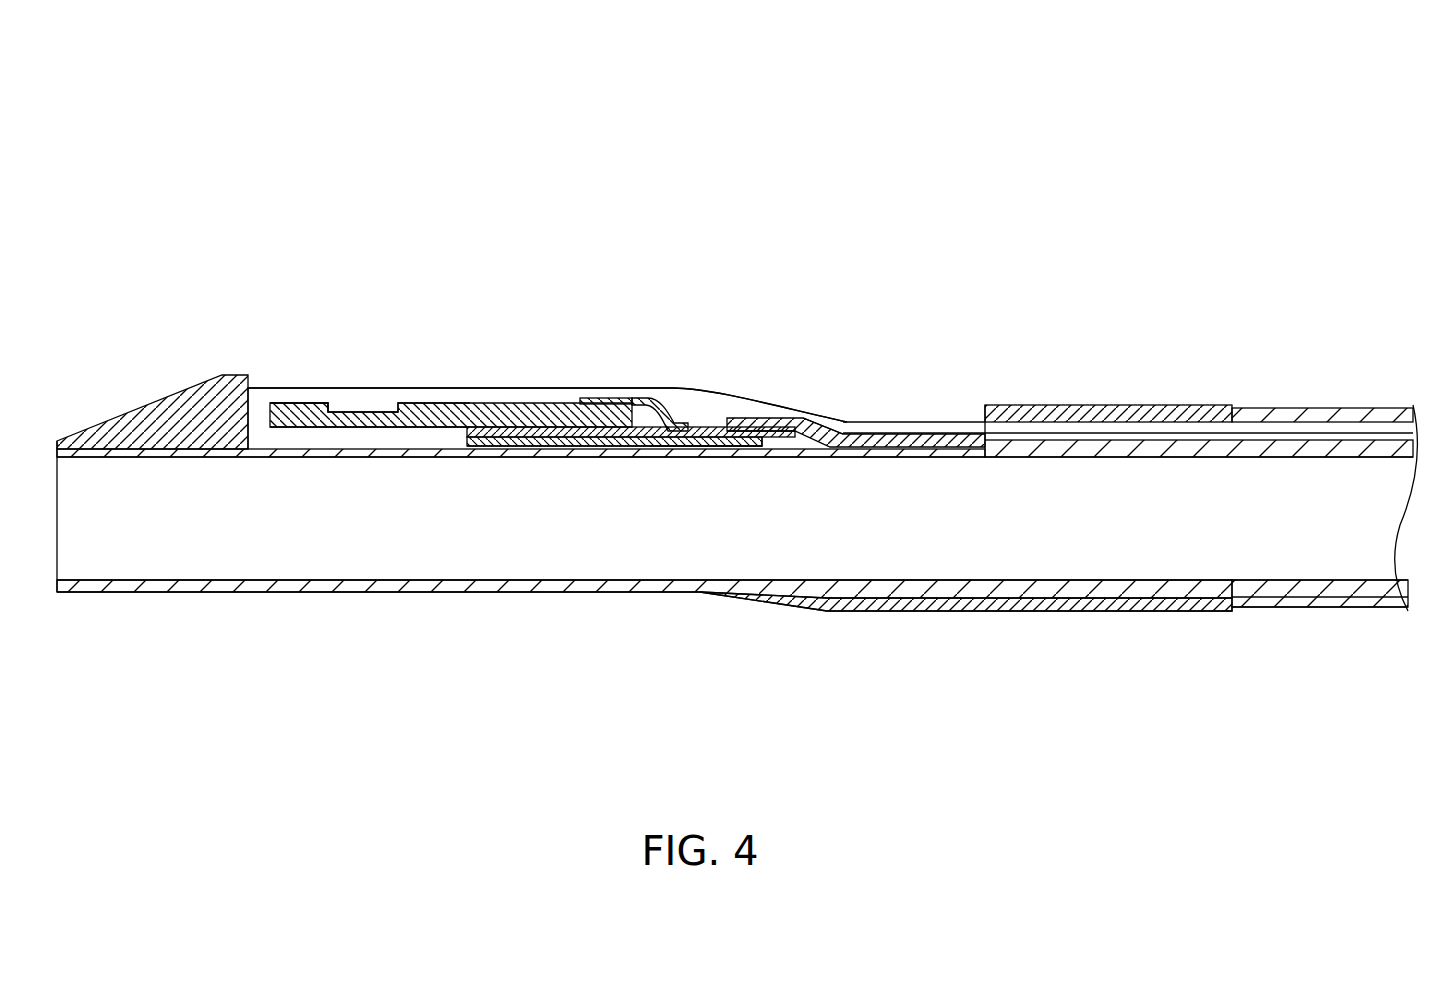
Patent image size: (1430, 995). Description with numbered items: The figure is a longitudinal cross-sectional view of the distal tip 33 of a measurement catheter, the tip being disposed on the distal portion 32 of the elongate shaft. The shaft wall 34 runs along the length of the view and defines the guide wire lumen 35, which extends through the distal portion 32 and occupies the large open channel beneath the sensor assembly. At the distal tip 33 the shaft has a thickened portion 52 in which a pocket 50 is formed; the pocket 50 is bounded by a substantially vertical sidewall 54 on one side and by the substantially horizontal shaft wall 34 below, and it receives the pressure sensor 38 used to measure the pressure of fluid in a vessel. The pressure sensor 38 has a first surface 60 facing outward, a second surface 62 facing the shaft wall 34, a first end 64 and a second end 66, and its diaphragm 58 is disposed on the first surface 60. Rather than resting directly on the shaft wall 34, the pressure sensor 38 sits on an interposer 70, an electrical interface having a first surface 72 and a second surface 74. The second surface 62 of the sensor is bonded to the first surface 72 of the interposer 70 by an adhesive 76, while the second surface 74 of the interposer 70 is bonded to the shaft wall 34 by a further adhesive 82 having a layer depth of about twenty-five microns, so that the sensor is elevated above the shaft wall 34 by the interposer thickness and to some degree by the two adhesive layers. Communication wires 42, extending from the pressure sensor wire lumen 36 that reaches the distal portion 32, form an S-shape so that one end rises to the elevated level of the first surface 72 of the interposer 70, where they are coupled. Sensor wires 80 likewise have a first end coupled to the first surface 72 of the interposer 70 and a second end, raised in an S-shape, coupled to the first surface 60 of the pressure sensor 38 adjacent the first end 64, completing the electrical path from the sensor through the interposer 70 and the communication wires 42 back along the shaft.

The distal portion 32 is at (985, 735).
The distal tip 33 is at (352, 198).
The shaft wall 34 is at (371, 455).
The guide wire lumen 35 is at (890, 535).
The pressure sensor wire lumen 36 is at (1384, 414).
The pressure sensor 38 is at (467, 418).
The communication wires 42 is at (830, 418).
The pocket 50 is at (452, 386).
The thickened portion 52 is at (739, 406).
The substantially vertical sidewall 54 is at (252, 388).
The diaphragm 58 is at (365, 408).
The first surface 60 is at (497, 427).
The second surface 62 is at (301, 428).
The first end 64 is at (603, 403).
The second end 66 is at (301, 408).
The interposer 70 is at (704, 446).
The first surface 72 is at (723, 428).
The second surface 74 is at (741, 447).
The adhesive 76 is at (496, 446).
The sensor wires 80 is at (640, 397).
The adhesive 82 is at (528, 446).